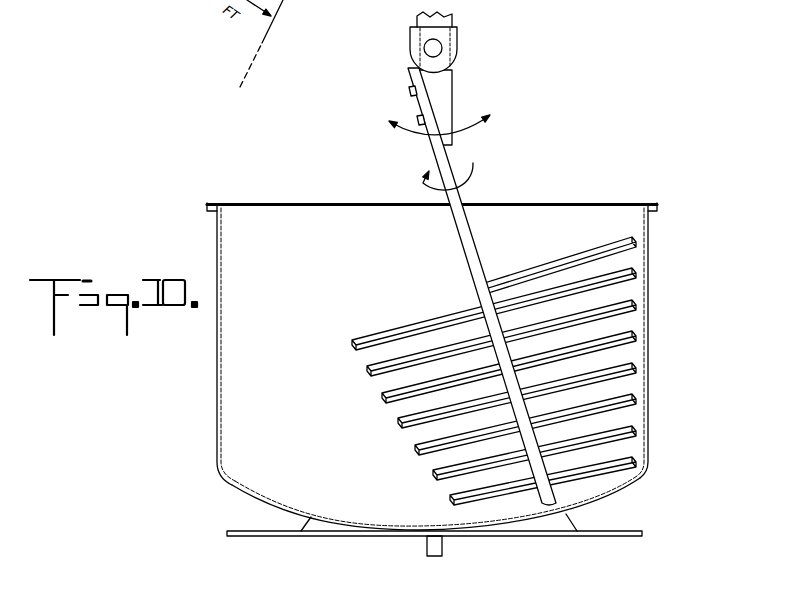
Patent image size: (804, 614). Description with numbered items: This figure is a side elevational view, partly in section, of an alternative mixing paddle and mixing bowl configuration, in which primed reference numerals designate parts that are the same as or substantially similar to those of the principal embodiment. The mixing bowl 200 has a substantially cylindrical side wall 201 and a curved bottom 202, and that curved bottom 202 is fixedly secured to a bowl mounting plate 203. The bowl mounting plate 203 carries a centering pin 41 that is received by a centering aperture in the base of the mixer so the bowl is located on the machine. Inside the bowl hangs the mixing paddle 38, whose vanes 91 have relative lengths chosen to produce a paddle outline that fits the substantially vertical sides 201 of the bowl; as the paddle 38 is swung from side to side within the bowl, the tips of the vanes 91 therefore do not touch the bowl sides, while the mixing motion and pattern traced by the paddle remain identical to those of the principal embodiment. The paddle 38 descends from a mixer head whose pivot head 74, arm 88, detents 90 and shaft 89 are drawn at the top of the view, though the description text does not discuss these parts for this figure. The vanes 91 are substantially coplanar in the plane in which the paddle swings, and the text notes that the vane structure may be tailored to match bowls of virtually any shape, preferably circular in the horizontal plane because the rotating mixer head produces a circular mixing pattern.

The pivot head 74 is at (421, 40).
The arm 88 is at (442, 92).
The detents 90 is at (418, 120).
The shaft 89 is at (481, 206).
The mixing paddle 38 is at (466, 282).
The mixing bowl 200 is at (444, 339).
The side wall 201 is at (649, 300).
The curved bottom 202 is at (407, 503).
The bowl mounting plate 203 is at (592, 535).
The centering pin 41 is at (427, 551).
The vanes 91 is at (366, 370).